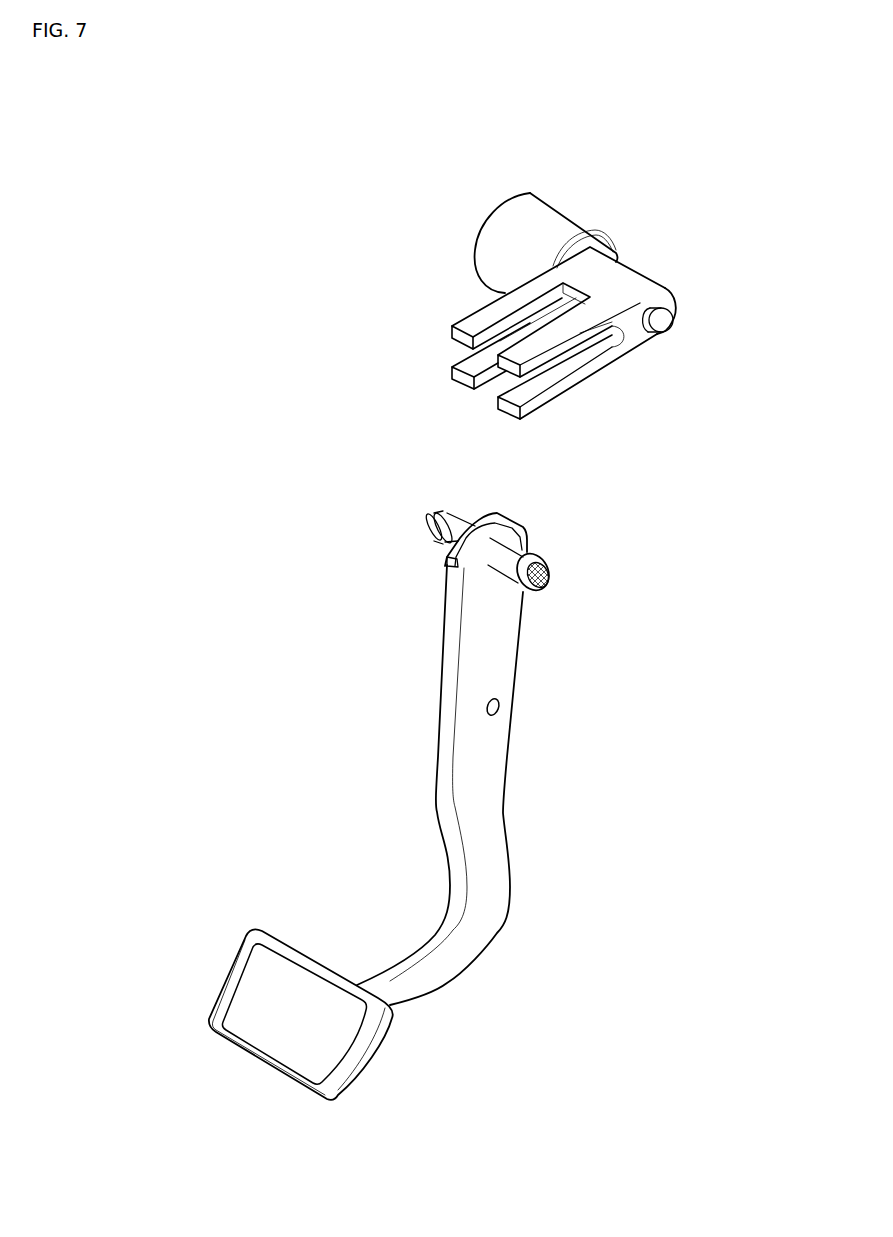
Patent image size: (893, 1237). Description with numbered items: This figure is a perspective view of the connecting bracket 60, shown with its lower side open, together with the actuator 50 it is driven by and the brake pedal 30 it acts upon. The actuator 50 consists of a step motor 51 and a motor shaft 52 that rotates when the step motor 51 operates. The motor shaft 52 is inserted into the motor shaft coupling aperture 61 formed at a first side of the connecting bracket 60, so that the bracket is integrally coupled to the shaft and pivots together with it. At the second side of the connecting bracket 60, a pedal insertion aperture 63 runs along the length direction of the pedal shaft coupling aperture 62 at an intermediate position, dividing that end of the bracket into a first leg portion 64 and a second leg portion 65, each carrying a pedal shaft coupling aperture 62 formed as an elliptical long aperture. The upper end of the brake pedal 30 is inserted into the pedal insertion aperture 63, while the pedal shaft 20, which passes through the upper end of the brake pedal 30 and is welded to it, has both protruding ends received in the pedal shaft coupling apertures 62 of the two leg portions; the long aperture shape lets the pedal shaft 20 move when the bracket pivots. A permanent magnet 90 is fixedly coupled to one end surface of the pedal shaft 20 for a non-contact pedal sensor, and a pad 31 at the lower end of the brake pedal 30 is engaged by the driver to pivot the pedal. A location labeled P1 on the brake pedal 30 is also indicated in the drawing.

The pedal shaft 20 is at (512, 553).
The brake pedal 30 is at (494, 758).
The pad 31 is at (243, 991).
The actuator 50 is at (546, 192).
The step motor 51 is at (555, 215).
The motor shaft 52 is at (667, 324).
The connecting bracket 60 is at (564, 320).
The motor shaft coupling aperture 61 is at (662, 308).
The pedal shaft coupling aperture 62 is at (583, 390).
The pedal insertion aperture 63 is at (512, 316).
The first leg portion 64 is at (470, 324).
The second leg portion 65 is at (607, 358).
The permanent magnet 90 is at (548, 578).
The pivot point P1 is at (501, 707).